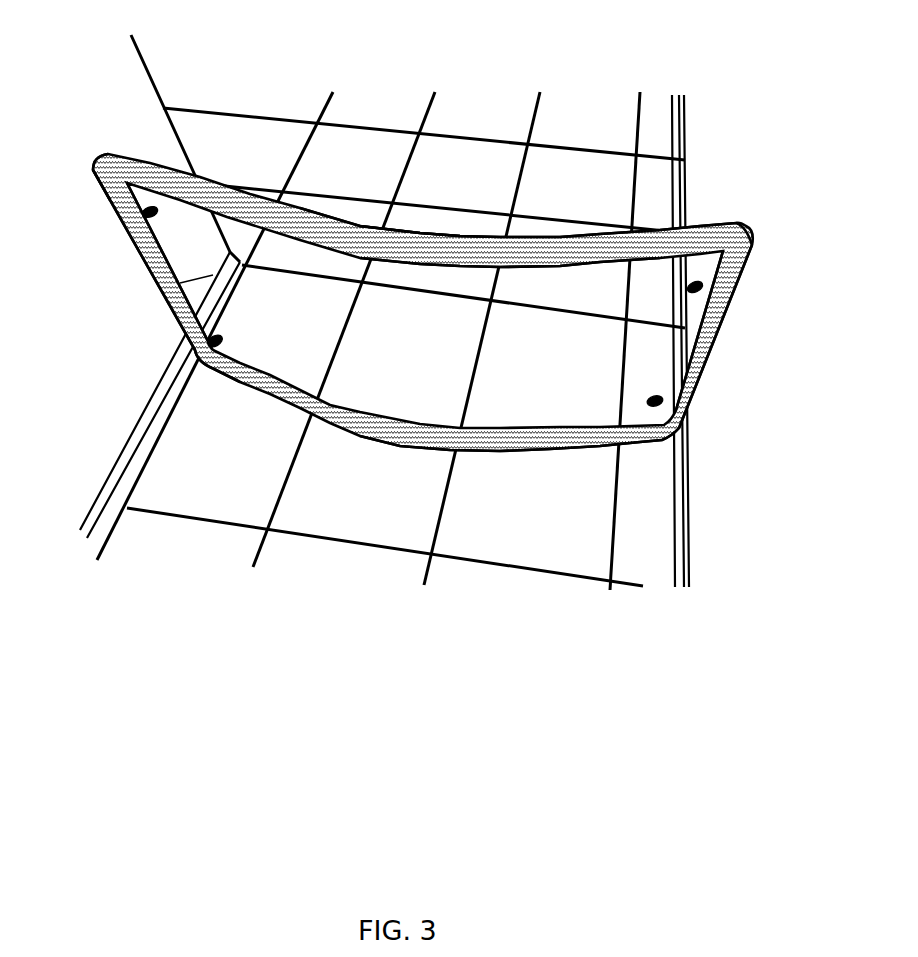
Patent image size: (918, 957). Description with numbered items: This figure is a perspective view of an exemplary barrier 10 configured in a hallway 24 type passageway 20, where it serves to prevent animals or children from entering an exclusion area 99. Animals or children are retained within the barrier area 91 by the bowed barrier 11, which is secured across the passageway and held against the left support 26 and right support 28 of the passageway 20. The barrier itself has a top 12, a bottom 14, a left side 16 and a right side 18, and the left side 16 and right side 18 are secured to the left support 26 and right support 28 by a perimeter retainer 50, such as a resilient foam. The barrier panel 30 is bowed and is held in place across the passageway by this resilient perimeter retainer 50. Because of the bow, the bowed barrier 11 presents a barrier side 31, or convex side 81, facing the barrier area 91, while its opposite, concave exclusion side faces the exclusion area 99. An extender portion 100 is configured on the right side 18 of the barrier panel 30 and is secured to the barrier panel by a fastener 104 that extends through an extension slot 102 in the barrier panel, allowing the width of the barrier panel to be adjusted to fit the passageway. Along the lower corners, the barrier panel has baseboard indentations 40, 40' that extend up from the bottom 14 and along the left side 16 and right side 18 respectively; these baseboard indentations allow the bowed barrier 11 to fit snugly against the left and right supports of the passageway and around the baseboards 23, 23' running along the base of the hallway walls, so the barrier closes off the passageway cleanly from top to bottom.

The barrier 10 is at (358, 229).
The bowed barrier 11 is at (532, 240).
The top 12 is at (558, 238).
The bottom 14 is at (513, 453).
The left side 16 is at (747, 267).
The right side 18 is at (165, 327).
The passageway 20 is at (152, 148).
The baseboard 23 is at (160, 395).
The baseboard 23' is at (714, 341).
The hallway 24 is at (140, 110).
The left support 26 is at (715, 518).
The right support 28 is at (110, 72).
The barrier panel 30 is at (722, 337).
The barrier side 31 is at (703, 223).
The baseboard indentation 40 is at (161, 357).
The baseboard indentation 40' is at (703, 411).
The perimeter retainer 50 is at (410, 237).
The convex side 81 is at (157, 285).
The barrier area 91 is at (397, 499).
The exclusion area 99 is at (500, 171).
The extender portion 100 is at (157, 230).
The extension slot 102 is at (103, 202).
The fastener 104 is at (222, 335).